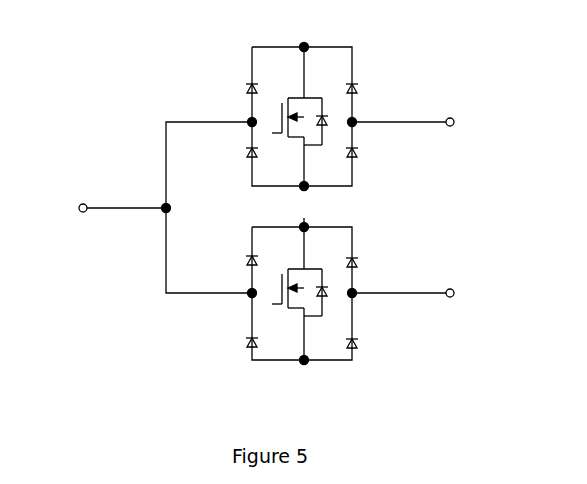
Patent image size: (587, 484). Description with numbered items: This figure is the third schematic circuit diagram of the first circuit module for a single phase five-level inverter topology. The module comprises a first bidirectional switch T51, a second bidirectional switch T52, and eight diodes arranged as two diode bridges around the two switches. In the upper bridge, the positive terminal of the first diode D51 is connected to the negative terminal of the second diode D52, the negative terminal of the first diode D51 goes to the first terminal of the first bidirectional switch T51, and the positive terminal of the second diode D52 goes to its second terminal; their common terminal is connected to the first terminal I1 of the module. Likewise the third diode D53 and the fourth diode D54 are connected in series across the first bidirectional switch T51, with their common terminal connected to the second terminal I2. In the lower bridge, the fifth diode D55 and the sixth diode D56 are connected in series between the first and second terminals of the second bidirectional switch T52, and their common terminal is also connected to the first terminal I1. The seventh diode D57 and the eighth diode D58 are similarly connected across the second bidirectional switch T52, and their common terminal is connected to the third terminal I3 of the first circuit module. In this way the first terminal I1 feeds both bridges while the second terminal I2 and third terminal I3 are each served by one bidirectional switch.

The first diode D51 is at (224, 88).
The second diode D52 is at (224, 153).
The third diode D53 is at (376, 95).
The fourth diode D54 is at (376, 162).
The fifth diode D55 is at (224, 258).
The sixth diode D56 is at (224, 341).
The seventh diode D57 is at (376, 265).
The eighth diode D58 is at (381, 347).
The first bidirectional switch T51 is at (316, 93).
The second bidirectional switch T52 is at (318, 322).
The first terminal I1 is at (67, 209).
The second terminal I2 is at (417, 127).
The third terminal I3 is at (417, 299).